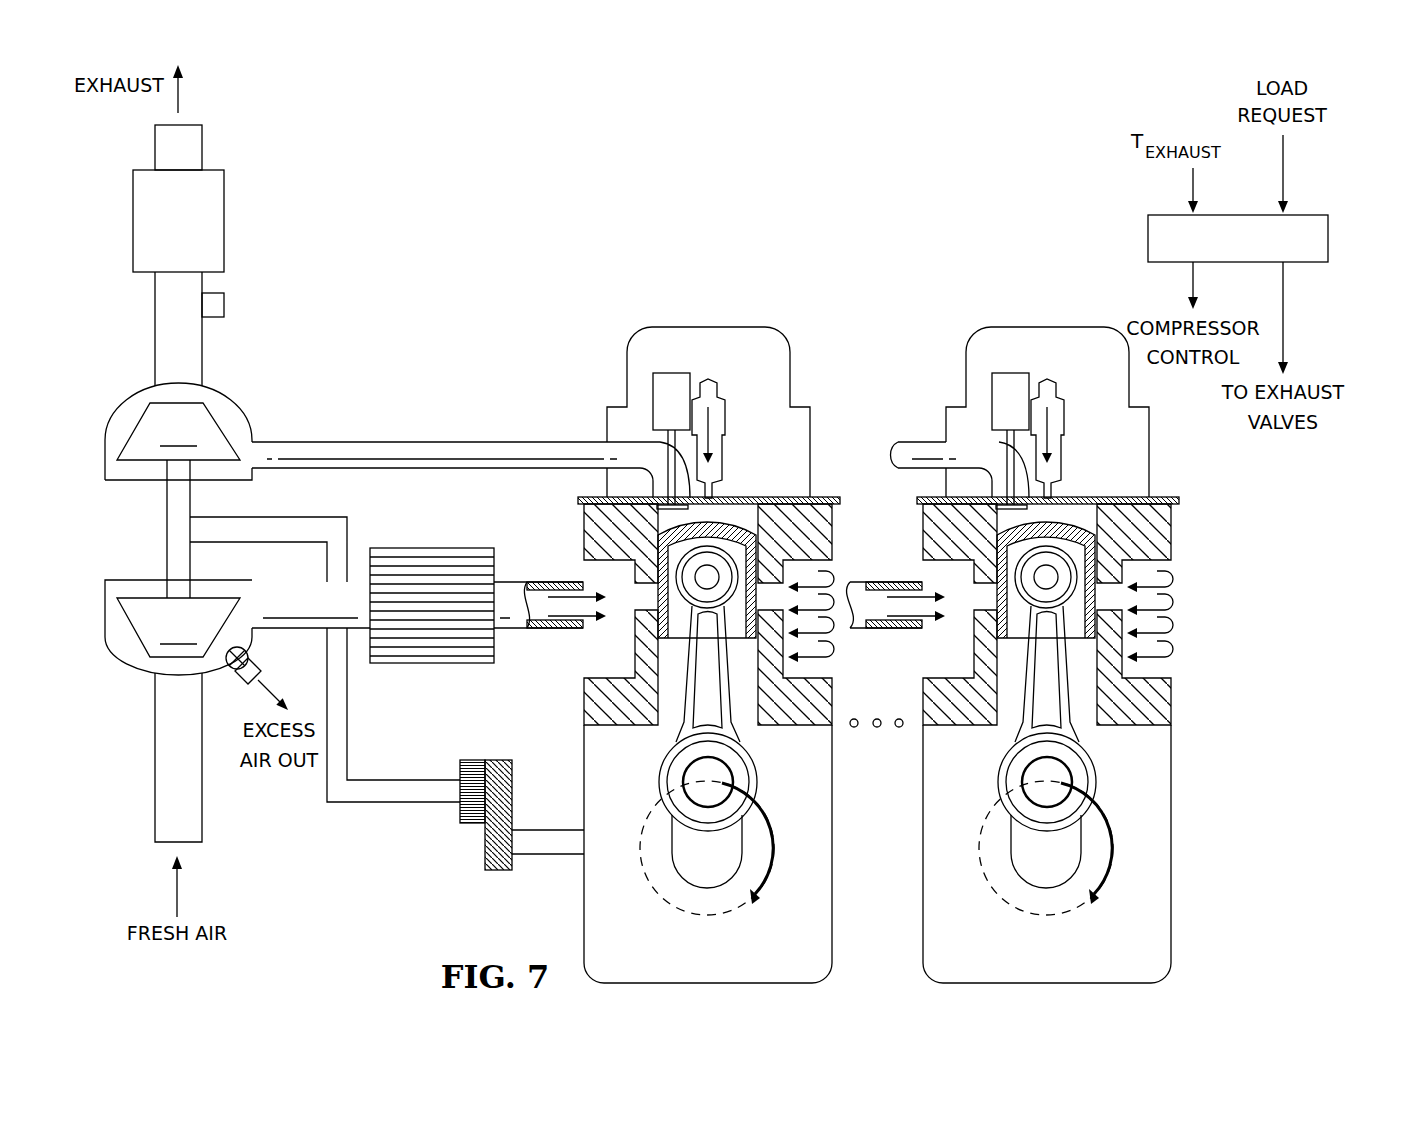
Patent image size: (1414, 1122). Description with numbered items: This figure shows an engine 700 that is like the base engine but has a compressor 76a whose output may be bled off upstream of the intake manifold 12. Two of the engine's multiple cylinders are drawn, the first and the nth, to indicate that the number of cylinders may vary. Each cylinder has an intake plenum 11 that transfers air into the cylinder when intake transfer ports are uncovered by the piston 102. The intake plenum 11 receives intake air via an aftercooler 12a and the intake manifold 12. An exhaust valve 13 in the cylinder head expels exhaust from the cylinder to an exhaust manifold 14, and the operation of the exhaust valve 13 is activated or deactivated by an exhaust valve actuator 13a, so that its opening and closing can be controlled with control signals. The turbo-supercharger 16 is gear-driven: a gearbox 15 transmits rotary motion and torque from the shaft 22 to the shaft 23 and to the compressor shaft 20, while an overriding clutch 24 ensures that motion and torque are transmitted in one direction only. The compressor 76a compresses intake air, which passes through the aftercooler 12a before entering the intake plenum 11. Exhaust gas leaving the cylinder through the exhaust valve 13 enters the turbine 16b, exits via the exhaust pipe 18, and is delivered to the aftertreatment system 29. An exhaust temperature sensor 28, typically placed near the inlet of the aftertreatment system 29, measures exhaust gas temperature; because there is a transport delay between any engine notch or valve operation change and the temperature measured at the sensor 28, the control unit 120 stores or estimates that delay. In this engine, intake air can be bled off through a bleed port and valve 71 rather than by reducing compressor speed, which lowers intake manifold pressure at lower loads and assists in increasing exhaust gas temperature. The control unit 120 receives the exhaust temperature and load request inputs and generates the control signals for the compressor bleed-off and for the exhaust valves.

The engine 700 is at (982, 130).
The control unit 120 is at (1328, 238).
The aftertreatment system 29 is at (133, 220).
The exhaust temperature sensor 28 is at (224, 305).
The exhaust pipe 18 is at (155, 327).
The turbo-supercharger 16 is at (90, 380).
The turbine 16b is at (178, 431).
The compressor 76a is at (178, 627).
The compressor shaft 20 is at (167, 530).
The bleed port and valve 71 is at (250, 654).
The exhaust manifold 14 is at (430, 442).
The intake manifold 12 is at (516, 582).
The aftercooler 12a is at (403, 664).
The shaft 23 is at (378, 803).
The overriding clutch 24 is at (468, 760).
The gearbox 15 is at (497, 870).
The shaft 22 is at (547, 855).
The intake plenum 11 is at (829, 570).
The piston 102 is at (741, 516).
The exhaust valve 13 is at (648, 458).
The exhaust valve actuator 13a is at (680, 373).